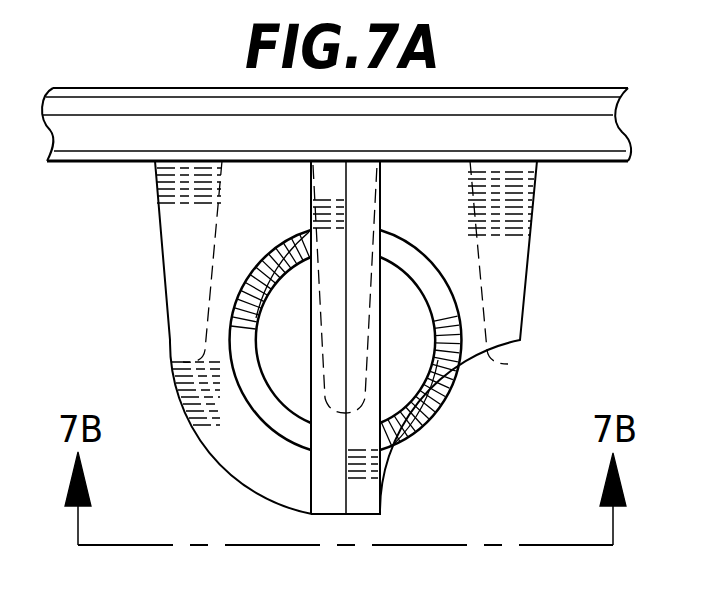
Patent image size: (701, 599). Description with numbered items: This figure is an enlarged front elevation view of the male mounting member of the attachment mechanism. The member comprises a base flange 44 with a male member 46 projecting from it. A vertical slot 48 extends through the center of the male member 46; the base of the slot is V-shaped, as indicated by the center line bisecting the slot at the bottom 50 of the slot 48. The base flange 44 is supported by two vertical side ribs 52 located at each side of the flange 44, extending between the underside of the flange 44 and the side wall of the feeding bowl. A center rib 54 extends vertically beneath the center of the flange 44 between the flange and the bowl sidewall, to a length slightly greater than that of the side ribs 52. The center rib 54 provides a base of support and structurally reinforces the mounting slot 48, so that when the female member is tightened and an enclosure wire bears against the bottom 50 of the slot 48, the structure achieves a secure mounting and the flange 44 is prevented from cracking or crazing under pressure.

The base flange 44 is at (527, 310).
The male member 46 is at (453, 384).
The vertical slot 48 is at (380, 498).
The bottom of slot 50 is at (340, 514).
The vertical side ribs 52 is at (160, 272).
The center rib 54 is at (373, 289).